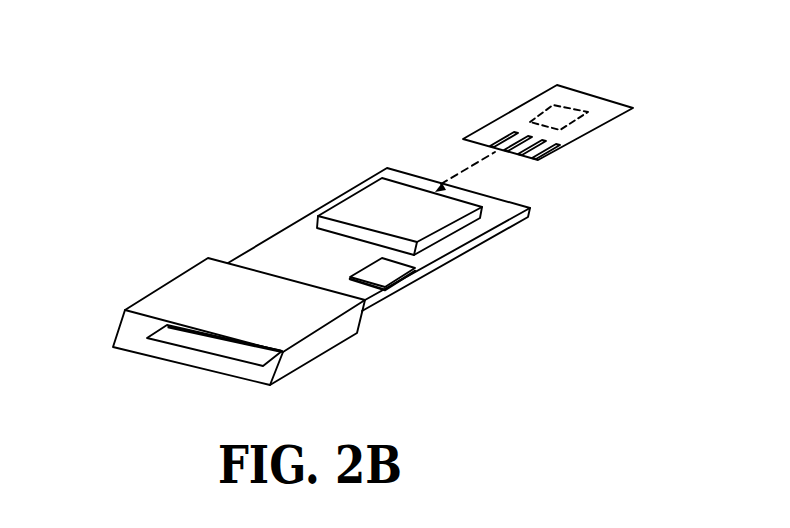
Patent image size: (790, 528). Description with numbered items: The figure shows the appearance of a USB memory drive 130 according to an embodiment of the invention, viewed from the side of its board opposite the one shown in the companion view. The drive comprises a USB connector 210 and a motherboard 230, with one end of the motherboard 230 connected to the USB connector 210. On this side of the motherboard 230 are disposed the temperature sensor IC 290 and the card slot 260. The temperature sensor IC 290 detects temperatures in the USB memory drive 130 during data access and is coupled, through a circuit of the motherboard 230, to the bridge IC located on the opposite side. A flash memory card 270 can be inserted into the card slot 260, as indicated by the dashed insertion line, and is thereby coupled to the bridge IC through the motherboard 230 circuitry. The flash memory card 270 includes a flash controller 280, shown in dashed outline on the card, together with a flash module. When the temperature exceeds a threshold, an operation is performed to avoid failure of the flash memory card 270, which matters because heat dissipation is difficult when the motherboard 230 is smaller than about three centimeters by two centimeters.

The USB memory drive 130 is at (393, 60).
The USB connector 210 is at (122, 330).
The motherboard 230 is at (465, 255).
The card slot 260 is at (317, 216).
The flash memory card 270 is at (622, 77).
The flash controller 280 is at (547, 108).
The temperature sensor IC 290 is at (390, 284).